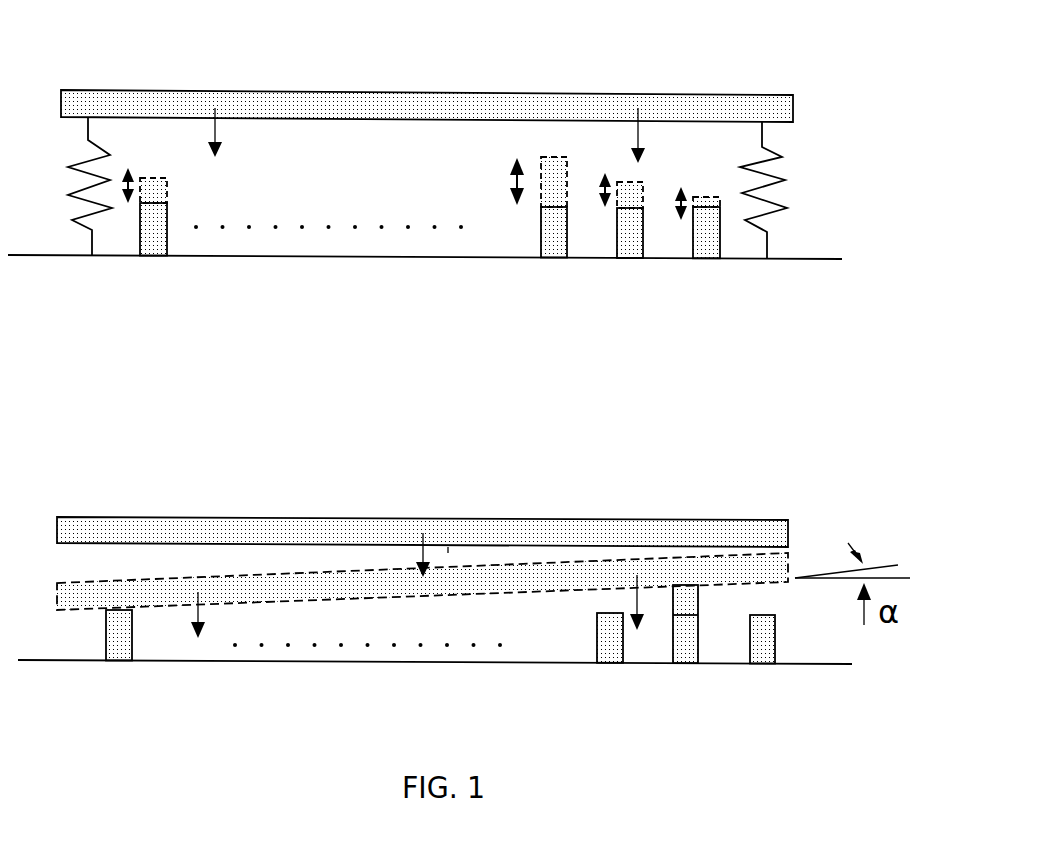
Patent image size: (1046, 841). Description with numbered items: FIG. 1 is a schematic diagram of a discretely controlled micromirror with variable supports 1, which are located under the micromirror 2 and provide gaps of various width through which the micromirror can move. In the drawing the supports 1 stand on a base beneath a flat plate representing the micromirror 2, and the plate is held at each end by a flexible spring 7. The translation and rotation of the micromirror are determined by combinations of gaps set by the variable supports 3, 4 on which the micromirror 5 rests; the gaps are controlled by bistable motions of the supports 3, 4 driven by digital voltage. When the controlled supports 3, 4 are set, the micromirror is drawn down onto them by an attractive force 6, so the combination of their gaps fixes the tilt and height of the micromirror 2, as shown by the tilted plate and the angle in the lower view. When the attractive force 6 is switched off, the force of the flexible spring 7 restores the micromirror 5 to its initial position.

The variable supports 1 is at (552, 248).
The micromirror 2 is at (677, 102).
The variable support 3 is at (120, 640).
The variable support 4 is at (680, 650).
The micromirror 5 is at (135, 590).
The attractive force 6 is at (618, 597).
The flexible spring 7 is at (772, 150).